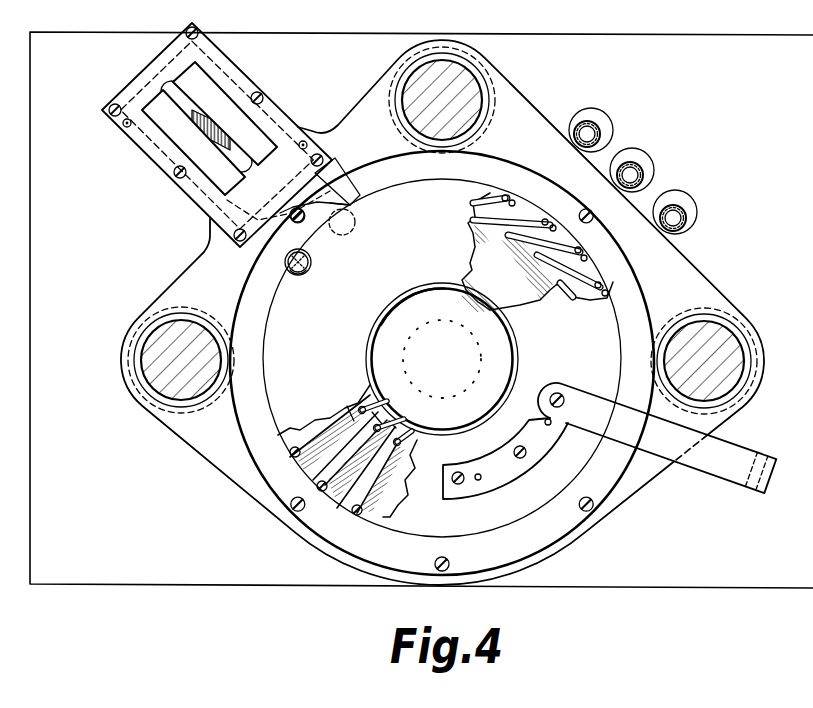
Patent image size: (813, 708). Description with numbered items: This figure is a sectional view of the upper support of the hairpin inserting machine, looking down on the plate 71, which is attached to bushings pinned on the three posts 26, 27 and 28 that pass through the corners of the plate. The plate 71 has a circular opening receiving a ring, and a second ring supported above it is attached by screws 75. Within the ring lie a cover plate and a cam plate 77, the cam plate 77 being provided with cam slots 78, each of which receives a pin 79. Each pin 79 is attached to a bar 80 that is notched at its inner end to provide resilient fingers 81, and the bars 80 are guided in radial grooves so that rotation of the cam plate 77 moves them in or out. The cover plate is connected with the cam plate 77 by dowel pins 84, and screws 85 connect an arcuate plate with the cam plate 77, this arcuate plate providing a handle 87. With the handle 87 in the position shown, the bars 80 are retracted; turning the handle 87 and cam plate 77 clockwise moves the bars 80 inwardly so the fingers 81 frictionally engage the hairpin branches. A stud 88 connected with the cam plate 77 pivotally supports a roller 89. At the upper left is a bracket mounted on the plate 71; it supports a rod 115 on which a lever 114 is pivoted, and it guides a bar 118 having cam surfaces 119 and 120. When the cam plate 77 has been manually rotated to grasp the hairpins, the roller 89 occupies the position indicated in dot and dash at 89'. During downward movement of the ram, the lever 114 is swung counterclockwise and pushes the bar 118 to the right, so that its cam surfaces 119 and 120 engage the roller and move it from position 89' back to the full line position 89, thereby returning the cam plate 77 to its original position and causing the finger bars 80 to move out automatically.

The post 26 is at (155, 383).
The post 27 is at (736, 370).
The post 28 is at (422, 77).
The plate 71 is at (713, 287).
The screw 75 is at (292, 499).
The cam plate 77 is at (478, 252).
The cam slot 78 is at (473, 221).
The pin 79 is at (505, 196).
The bar 80 is at (342, 408).
The resilient finger 81 is at (372, 402).
The dowel pin 84 is at (548, 425).
The screw 85 is at (560, 395).
The handle 87 is at (737, 443).
The stud 88 is at (310, 268).
The roller 89 is at (294, 288).
The roller position 89' is at (349, 233).
The lever 114 is at (247, 166).
The rod 115 is at (180, 152).
The bar 118 is at (353, 198).
The cam surface 119 is at (358, 197).
The cam surface 120 is at (304, 224).